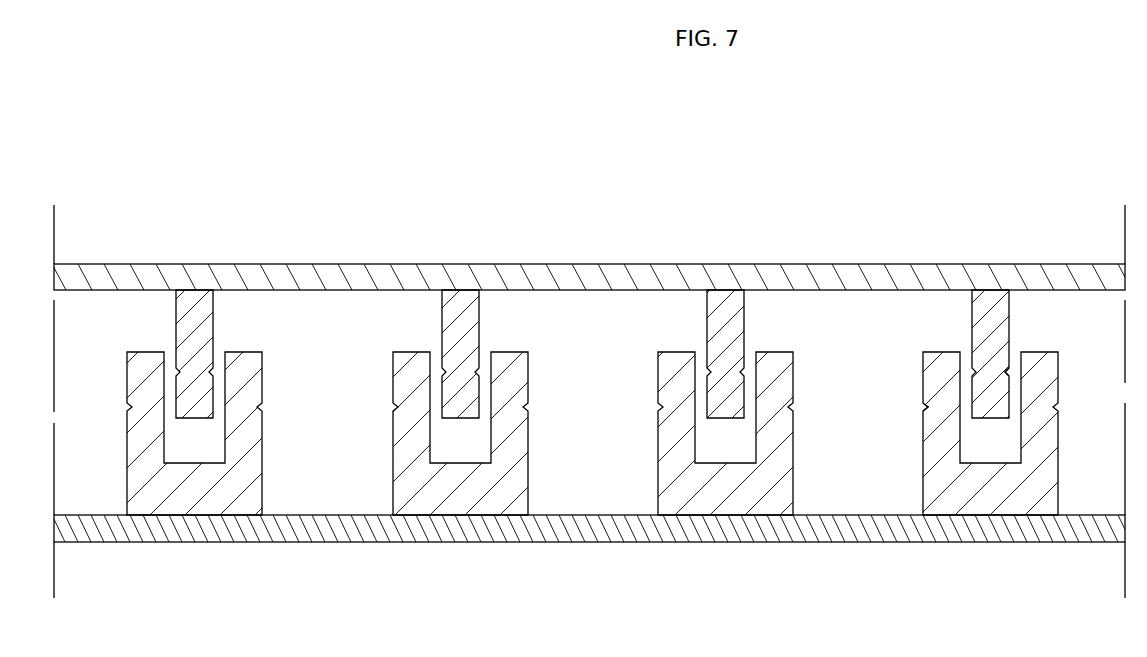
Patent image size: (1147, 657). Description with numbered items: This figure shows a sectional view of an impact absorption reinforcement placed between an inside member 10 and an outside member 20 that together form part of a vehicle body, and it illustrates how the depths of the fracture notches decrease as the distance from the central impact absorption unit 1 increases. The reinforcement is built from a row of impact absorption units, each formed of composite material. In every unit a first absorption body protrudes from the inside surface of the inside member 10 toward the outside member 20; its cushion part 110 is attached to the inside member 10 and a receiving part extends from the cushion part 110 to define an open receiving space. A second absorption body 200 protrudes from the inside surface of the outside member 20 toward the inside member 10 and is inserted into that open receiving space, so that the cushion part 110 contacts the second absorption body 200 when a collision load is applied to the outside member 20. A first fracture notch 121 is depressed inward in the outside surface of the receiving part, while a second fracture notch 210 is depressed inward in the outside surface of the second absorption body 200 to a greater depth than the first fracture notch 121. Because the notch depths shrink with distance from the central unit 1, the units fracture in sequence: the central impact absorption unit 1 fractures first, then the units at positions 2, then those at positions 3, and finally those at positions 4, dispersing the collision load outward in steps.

The central impact absorption unit 1 is at (969, 422).
The impact absorption unit 2 is at (731, 567).
The impact absorption unit 3 is at (465, 567).
The impact absorption unit 4 is at (201, 567).
The inside member 10 is at (864, 532).
The outside member 20 is at (826, 280).
The cushion part 110 is at (969, 410).
The first fracture notch 121 is at (925, 408).
The second absorption body 200 is at (990, 300).
The second fracture notch 210 is at (1008, 372).